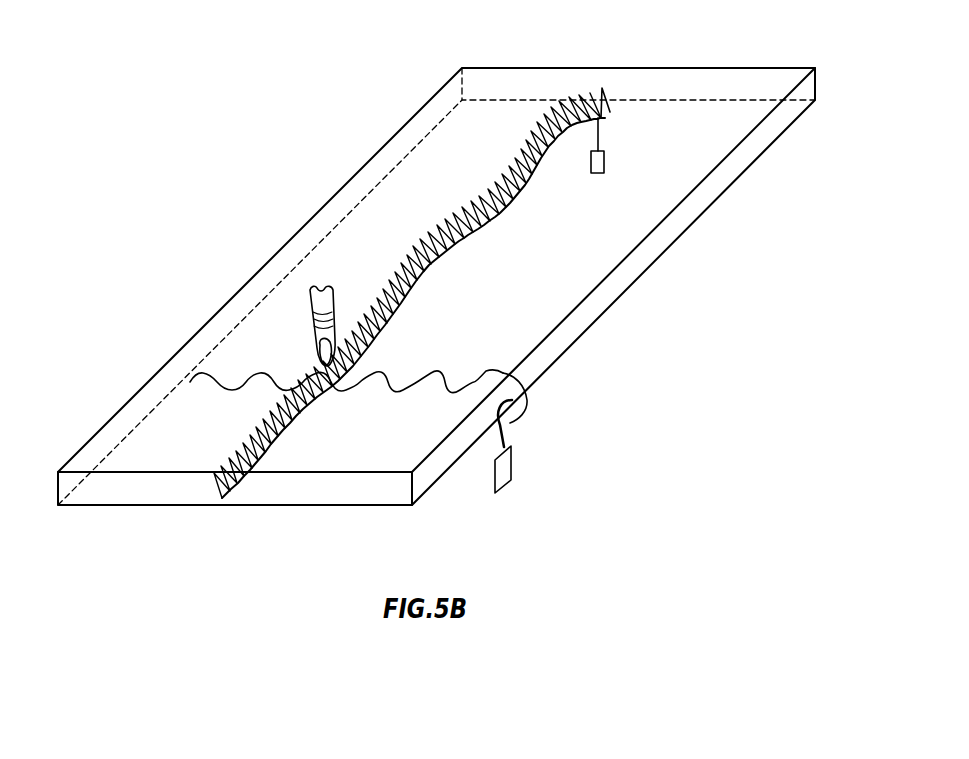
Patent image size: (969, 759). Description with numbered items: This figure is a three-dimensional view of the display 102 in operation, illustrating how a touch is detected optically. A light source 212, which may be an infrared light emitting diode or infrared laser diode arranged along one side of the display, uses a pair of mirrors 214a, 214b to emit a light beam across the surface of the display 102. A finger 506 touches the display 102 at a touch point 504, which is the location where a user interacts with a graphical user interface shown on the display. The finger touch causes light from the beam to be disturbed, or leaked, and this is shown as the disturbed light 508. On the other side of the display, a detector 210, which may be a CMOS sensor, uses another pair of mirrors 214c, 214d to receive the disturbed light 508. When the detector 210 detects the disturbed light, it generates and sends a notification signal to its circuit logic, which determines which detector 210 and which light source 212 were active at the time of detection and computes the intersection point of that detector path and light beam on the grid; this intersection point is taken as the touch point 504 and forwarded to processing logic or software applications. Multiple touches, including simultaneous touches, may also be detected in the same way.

The display 102 is at (227, 187).
The detector 210 is at (513, 462).
The light source 212 is at (605, 157).
The mirror 214a is at (600, 129).
The mirror 214b is at (608, 112).
The mirror 214c is at (527, 406).
The mirror 214d is at (498, 422).
The touch point 504 is at (347, 371).
The finger 506 is at (308, 309).
The disturbed light 508 is at (477, 370).